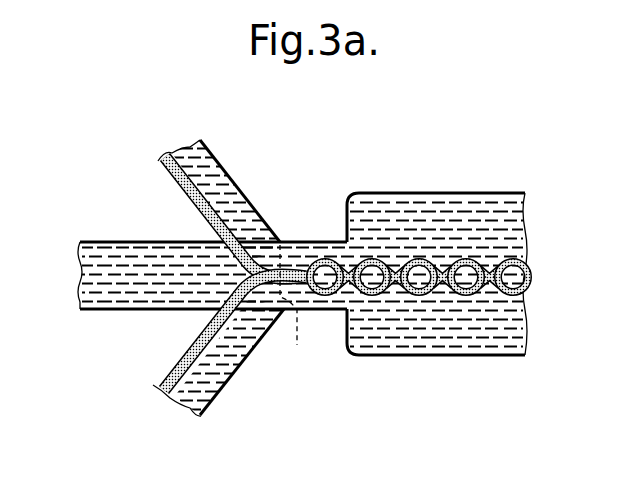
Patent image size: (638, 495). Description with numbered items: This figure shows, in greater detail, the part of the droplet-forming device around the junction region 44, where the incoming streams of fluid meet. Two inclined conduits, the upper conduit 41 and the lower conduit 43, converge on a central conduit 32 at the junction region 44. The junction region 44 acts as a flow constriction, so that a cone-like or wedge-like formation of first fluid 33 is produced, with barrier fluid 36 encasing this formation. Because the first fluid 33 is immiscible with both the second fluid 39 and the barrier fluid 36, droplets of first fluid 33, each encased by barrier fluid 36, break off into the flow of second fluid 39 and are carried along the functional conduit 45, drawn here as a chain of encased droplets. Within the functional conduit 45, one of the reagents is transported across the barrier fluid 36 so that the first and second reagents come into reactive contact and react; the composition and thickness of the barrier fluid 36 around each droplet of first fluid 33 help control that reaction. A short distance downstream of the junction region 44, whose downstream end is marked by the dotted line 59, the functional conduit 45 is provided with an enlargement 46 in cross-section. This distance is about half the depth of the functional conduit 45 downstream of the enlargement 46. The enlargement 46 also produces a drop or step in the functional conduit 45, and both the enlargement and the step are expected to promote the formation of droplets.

The main channel 32 is at (120, 242).
The first fluid 33 is at (107, 297).
The barrier fluid 36 is at (163, 167).
The second fluid 39 is at (204, 154).
The upper branch channel 41 is at (240, 182).
The lower branch channel 43 is at (215, 398).
The junction region 44 is at (237, 274).
The functional conduit 45 is at (528, 383).
The enlargement 46 is at (345, 213).
The dotted line 59 is at (296, 311).